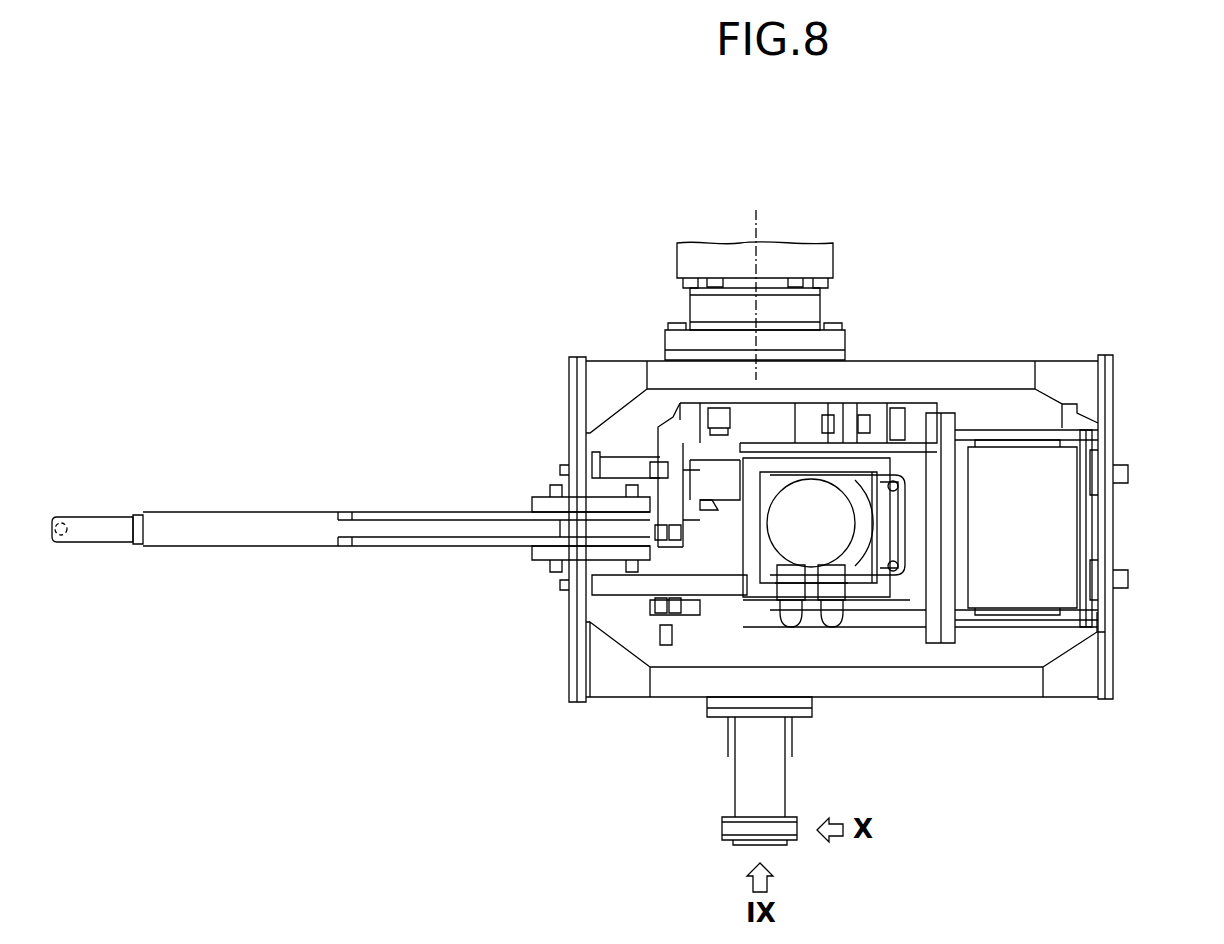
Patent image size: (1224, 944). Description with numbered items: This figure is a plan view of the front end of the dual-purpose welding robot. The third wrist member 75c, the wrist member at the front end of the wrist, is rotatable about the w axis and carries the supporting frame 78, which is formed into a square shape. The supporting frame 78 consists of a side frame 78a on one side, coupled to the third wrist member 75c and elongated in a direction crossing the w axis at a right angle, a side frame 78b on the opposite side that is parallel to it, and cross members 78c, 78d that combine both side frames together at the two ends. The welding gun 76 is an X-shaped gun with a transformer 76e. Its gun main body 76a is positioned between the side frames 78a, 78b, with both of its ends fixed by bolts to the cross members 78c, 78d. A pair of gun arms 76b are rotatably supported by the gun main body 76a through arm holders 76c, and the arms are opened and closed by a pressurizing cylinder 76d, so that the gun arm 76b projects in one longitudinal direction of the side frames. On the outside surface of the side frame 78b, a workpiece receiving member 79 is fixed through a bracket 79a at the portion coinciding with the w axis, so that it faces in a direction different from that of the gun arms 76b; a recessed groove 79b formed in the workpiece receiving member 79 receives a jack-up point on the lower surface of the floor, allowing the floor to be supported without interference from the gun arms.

The third wrist member 75c is at (677, 265).
The welding gun 76 is at (575, 506).
The gun main body 76a is at (907, 595).
The gun arm 76b is at (298, 528).
The arm holder 76c is at (710, 547).
The pressurizing cylinder 76d is at (813, 548).
The transformer 76e is at (1033, 465).
The supporting frame 78 is at (842, 545).
The side frame 78a is at (963, 372).
The side frame 78b is at (958, 690).
The cross member 78c is at (578, 445).
The cross member 78d is at (1117, 532).
The workpiece receiving member 79 is at (683, 798).
The bracket 79a is at (743, 783).
The recessed groove 79b is at (733, 828).